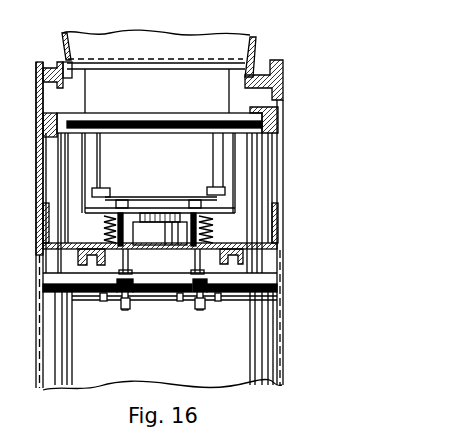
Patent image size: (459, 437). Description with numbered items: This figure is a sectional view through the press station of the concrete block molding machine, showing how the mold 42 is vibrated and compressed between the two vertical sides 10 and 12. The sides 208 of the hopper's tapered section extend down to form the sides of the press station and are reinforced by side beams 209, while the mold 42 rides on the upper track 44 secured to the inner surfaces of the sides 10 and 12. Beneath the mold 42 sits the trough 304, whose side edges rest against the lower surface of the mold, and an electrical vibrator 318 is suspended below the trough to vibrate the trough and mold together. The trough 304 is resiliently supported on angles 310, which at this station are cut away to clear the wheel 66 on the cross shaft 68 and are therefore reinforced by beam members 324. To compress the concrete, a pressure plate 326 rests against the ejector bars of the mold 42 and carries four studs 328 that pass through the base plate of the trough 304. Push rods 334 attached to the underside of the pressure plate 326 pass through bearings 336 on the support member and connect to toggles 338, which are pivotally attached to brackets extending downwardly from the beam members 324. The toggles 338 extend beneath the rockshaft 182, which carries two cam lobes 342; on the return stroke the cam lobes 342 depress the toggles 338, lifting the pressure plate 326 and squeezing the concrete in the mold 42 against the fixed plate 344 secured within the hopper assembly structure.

The fixed plate 344 is at (93, 57).
The mold 42 is at (175, 76).
The sides of the tapered section 208 is at (252, 40).
The side beams 209 is at (273, 62).
The upper track 44 is at (279, 127).
The trough 304 is at (243, 190).
The pressure plate 326 is at (117, 188).
The push rods 334 is at (190, 235).
The electrical vibrator 318 is at (146, 227).
The studs 328 is at (110, 238).
The bearings 336 is at (134, 243).
The angles 310 is at (279, 244).
The beam members 324 is at (247, 256).
The rockshaft 182 is at (42, 293).
The vertical side 12 is at (52, 352).
The cross shaft 68 is at (88, 310).
The wheel 66 is at (75, 368).
The vertical side 10 is at (285, 367).
The cam lobes 342 is at (131, 300).
The toggles 338 is at (129, 309).